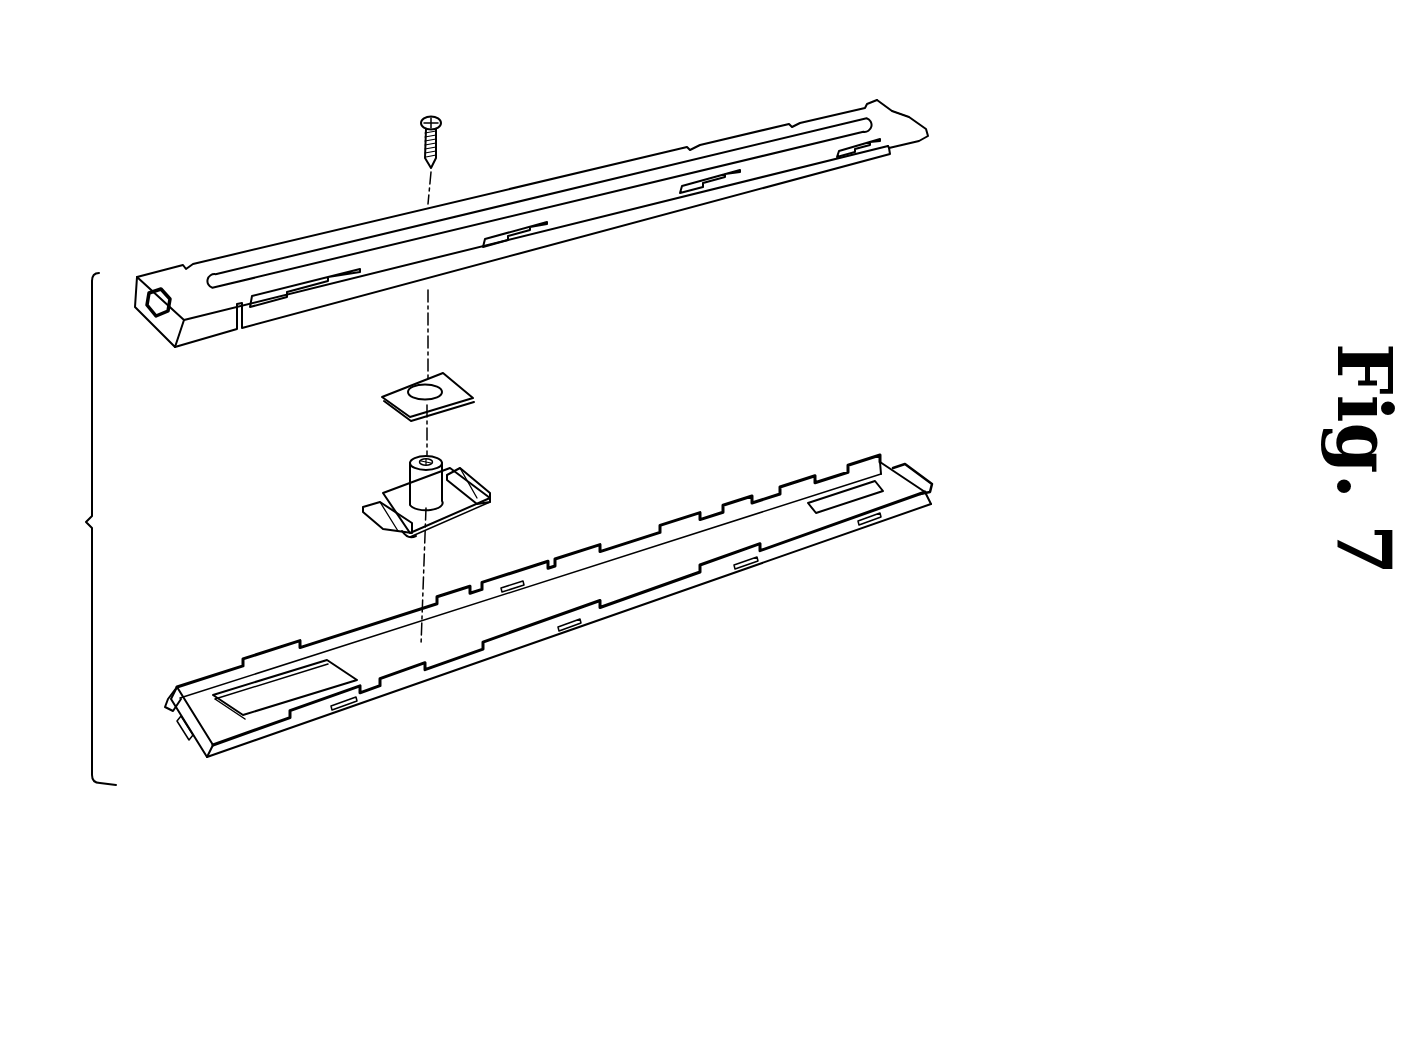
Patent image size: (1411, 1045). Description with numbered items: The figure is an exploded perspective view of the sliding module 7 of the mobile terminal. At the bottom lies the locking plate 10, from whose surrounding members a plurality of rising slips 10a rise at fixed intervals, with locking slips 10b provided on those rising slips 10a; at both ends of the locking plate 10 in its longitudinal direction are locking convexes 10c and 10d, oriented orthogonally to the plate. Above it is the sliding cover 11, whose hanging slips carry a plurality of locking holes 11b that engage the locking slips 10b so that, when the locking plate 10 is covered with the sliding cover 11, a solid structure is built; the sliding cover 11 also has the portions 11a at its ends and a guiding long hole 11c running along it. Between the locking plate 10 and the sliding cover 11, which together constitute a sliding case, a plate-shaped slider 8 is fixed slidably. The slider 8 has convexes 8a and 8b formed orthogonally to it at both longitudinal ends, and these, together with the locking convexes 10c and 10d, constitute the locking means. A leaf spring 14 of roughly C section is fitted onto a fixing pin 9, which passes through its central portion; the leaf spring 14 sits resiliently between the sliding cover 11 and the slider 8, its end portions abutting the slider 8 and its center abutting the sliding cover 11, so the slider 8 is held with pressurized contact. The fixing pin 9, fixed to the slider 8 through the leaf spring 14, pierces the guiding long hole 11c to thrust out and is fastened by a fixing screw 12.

The sliding module 7 is at (80, 539).
The slider 8 is at (436, 494).
The convex 8a is at (412, 534).
The convex 8b is at (490, 524).
The fixing pin 9 is at (428, 488).
The locking plate 10 is at (562, 580).
The rising slips 10a is at (545, 556).
The locking slips 10b is at (870, 519).
The locking convex 10c is at (248, 748).
The locking convex 10d is at (880, 484).
The sliding cover 11 is at (553, 238).
The rail end portions 11a is at (919, 138).
The locking holes 11b is at (895, 113).
The guiding long hole 11c is at (738, 150).
The fixing screw 12 is at (437, 151).
The leaf spring 14 is at (457, 393).